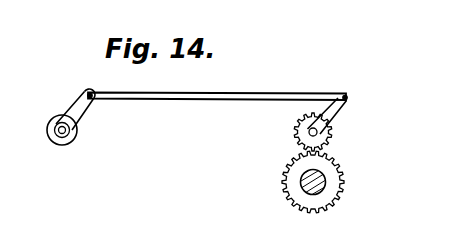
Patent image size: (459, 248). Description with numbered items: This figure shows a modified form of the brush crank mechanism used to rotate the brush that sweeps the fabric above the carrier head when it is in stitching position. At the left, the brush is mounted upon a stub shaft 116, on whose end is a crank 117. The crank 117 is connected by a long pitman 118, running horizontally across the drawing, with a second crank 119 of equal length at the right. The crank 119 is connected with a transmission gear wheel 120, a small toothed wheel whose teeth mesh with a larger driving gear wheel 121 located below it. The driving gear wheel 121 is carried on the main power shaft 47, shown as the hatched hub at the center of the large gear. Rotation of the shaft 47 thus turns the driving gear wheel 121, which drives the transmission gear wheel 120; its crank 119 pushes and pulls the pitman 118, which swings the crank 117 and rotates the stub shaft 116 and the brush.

The power shaft 47 is at (303, 188).
The stub shaft 116 is at (74, 136).
The crank 117 is at (72, 113).
The pitman 118 is at (217, 108).
The crank 119 is at (330, 113).
The transmission gear wheel 120 is at (330, 137).
The driving gear wheel 121 is at (332, 172).